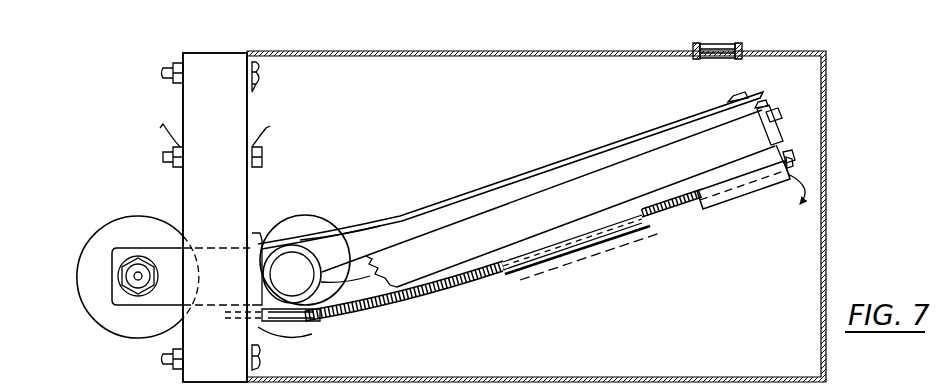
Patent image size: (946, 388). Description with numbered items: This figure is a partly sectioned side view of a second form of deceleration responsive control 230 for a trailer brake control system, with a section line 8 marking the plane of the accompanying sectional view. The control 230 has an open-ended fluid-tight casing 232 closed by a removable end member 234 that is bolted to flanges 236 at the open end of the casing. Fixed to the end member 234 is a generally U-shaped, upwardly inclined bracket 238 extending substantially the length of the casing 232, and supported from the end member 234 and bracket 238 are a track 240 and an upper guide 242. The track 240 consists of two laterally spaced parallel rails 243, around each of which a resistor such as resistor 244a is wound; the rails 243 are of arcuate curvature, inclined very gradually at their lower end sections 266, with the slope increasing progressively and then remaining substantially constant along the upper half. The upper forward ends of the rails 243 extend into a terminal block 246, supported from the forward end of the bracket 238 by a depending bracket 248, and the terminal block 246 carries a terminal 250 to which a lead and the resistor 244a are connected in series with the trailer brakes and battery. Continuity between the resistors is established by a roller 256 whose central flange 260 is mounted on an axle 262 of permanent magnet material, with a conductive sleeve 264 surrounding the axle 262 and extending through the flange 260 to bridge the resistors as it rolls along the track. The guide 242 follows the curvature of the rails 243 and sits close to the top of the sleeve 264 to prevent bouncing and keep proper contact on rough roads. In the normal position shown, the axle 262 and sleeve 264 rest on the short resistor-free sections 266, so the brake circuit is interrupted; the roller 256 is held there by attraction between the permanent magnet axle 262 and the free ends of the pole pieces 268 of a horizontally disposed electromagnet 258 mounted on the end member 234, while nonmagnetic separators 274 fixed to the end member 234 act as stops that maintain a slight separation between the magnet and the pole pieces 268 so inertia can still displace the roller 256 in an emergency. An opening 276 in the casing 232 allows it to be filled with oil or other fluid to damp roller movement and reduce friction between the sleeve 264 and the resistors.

The section line 8- 8 is at (183, 87).
The deceleration responsive control 230 is at (170, 45).
The casing 232 is at (352, 50).
The end member 234 is at (234, 175).
The flanges 236 is at (258, 90).
The bracket 238 is at (543, 223).
The track 240 is at (628, 245).
The upper guide 242 is at (557, 166).
The rails 243 is at (526, 270).
The resistor 244a is at (408, 306).
The terminal block 246 is at (748, 190).
The depending bracket 248 is at (773, 143).
The terminal 250 is at (786, 169).
The roller 256 is at (306, 208).
The electromagnet 258 is at (96, 247).
The central flange 260 is at (335, 232).
The axle 262 is at (375, 256).
The conductive sleeve 264 is at (344, 277).
The short sections 266 is at (302, 330).
The pole pieces 268 is at (156, 297).
The nonmagnetic separators 274 is at (318, 273).
The opening 276 is at (722, 43).